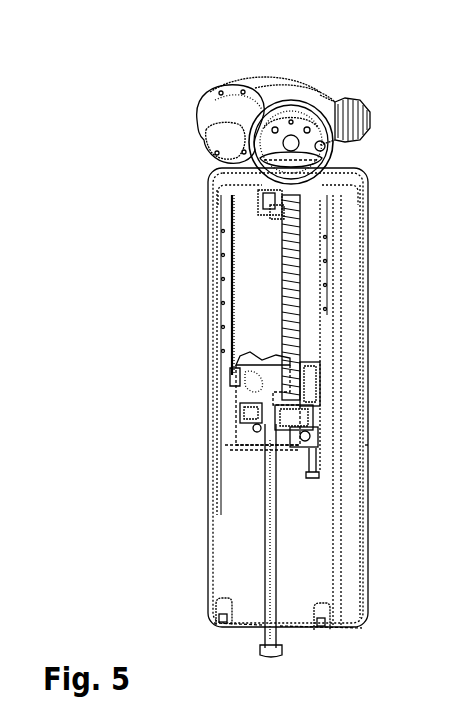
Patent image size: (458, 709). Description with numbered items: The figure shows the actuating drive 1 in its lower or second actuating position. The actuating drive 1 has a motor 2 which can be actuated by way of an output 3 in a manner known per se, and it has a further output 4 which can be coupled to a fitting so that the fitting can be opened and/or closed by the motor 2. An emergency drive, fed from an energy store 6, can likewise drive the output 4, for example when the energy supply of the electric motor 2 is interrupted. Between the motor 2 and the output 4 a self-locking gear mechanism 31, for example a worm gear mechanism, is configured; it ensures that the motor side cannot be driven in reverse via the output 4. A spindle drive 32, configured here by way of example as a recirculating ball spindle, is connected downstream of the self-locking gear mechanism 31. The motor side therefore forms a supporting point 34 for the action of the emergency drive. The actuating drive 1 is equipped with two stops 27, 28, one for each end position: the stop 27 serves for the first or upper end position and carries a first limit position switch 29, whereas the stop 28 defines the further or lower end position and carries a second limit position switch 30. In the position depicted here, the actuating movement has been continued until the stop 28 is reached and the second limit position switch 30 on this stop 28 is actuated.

The actuating drive 1 is at (148, 195).
The motor 2 is at (365, 118).
The output 3 is at (215, 100).
The output 4 is at (265, 632).
The energy store 6 is at (411, 448).
The stop 27 is at (268, 202).
The stop 28 is at (310, 450).
The first limit position switch 29 is at (276, 212).
The second limit position switch 30 is at (316, 433).
The self-locking gear mechanism 31 is at (322, 112).
The spindle drive 32 is at (328, 392).
The supporting point 34 is at (272, 410).